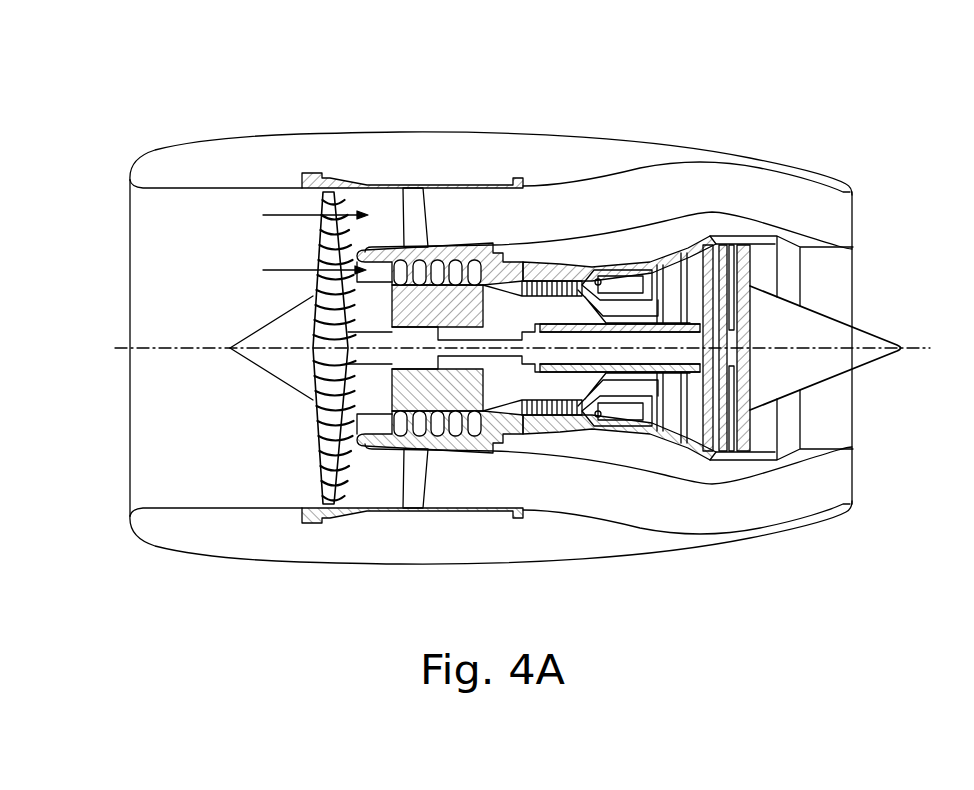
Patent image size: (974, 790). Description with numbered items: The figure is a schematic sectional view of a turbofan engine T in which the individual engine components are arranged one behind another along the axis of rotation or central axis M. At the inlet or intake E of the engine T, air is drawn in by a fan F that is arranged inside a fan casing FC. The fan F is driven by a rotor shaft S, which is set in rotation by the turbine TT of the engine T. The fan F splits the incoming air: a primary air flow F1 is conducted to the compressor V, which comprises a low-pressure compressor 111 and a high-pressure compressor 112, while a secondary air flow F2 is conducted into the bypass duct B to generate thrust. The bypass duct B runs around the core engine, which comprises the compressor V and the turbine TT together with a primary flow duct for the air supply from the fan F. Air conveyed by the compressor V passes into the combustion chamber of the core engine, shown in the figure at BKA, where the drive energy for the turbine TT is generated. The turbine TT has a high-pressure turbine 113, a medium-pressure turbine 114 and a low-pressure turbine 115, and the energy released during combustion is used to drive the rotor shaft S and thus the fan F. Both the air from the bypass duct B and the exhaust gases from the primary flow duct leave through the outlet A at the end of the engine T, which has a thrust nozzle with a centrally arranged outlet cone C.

The engine T is at (816, 106).
The inlet E is at (173, 410).
The outlet A is at (836, 268).
The bypass duct B is at (628, 195).
The fan casing FC is at (328, 180).
The fan F is at (316, 462).
The primary air flow F1 is at (300, 271).
The secondary air flow F2 is at (300, 217).
The turbine TT is at (708, 209).
The compressor V is at (489, 480).
The low-pressure compressor 111 is at (415, 265).
The high-pressure compressor 112 is at (533, 275).
The rotor shaft S is at (562, 372).
The combustion chamber BKA is at (613, 415).
The high-pressure turbine 113 is at (673, 432).
The medium-pressure turbine 114 is at (697, 439).
The low-pressure turbine 115 is at (733, 455).
The central axis M is at (910, 349).
The outlet cone C is at (842, 360).